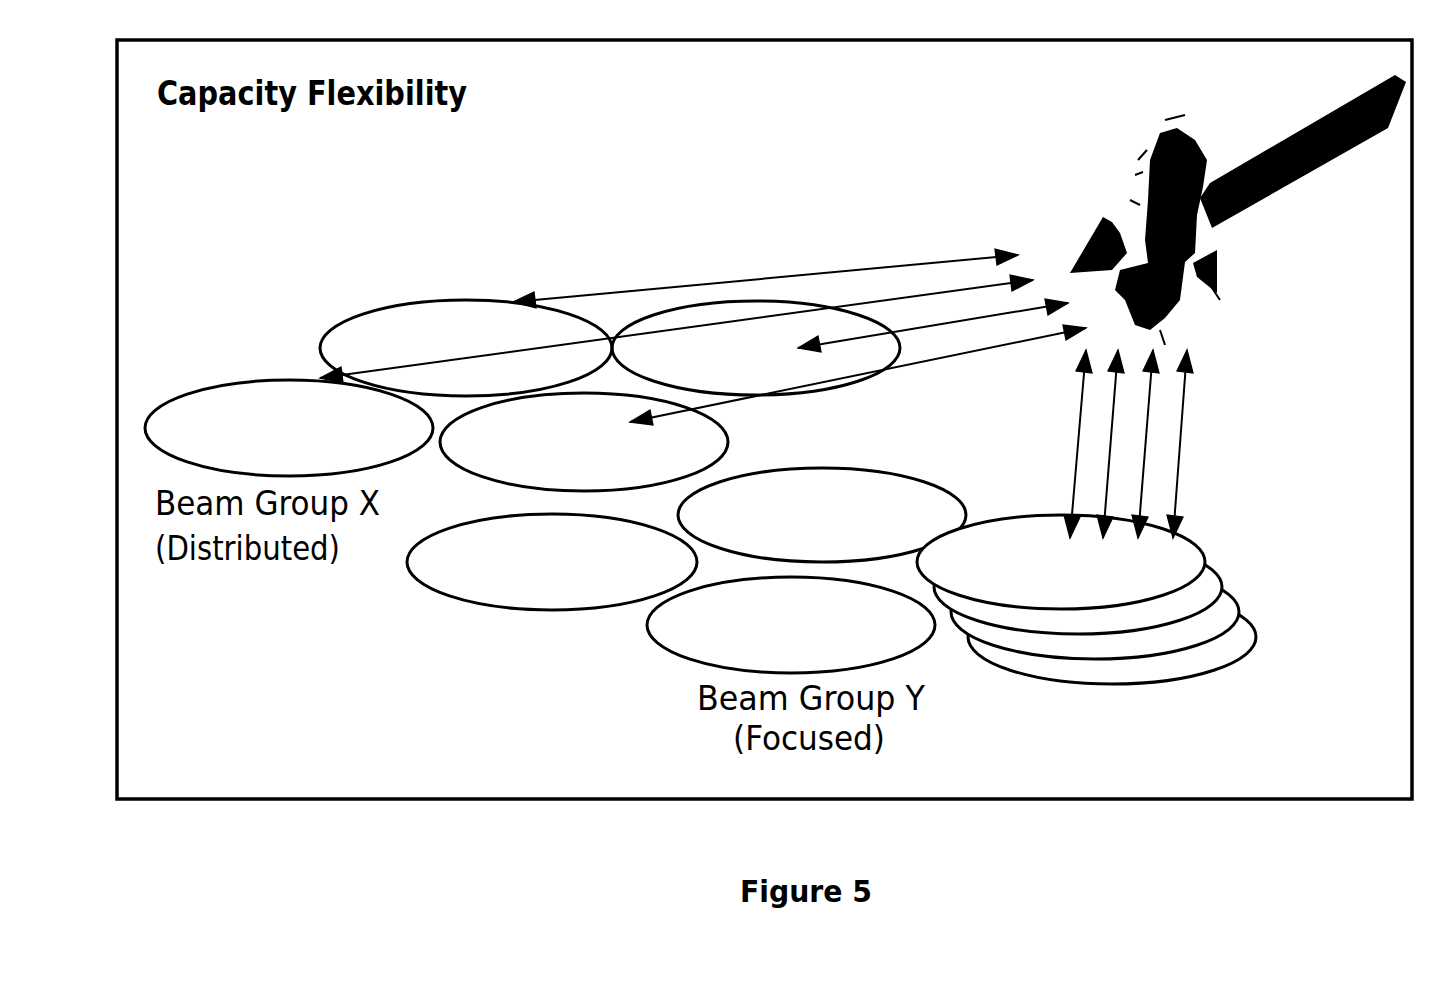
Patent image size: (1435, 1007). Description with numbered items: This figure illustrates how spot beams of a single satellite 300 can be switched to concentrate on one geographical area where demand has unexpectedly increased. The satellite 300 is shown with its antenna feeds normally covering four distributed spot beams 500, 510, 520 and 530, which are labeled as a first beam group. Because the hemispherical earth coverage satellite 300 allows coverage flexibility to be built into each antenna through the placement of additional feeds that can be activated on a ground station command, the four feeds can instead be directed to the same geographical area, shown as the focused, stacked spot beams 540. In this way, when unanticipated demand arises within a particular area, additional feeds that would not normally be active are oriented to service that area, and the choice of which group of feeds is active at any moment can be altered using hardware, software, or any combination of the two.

The satellite 300 is at (1190, 153).
The spot beam 500 is at (237, 385).
The spot beam 510 is at (480, 300).
The spot beam 520 is at (728, 437).
The spot beam 530 is at (877, 367).
The spot beams 540 is at (1222, 660).